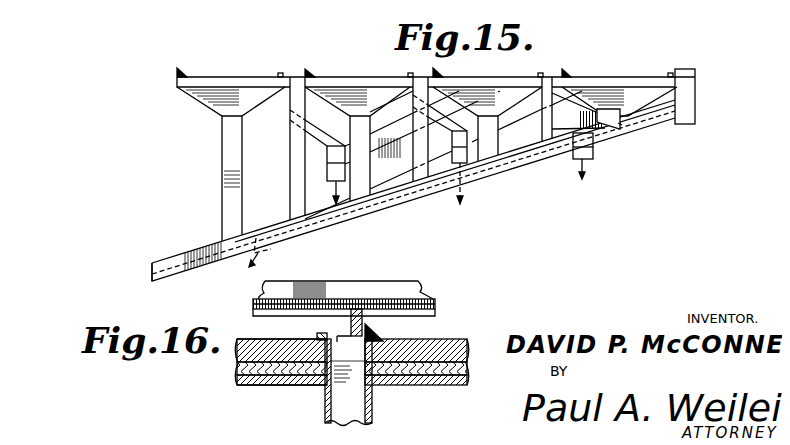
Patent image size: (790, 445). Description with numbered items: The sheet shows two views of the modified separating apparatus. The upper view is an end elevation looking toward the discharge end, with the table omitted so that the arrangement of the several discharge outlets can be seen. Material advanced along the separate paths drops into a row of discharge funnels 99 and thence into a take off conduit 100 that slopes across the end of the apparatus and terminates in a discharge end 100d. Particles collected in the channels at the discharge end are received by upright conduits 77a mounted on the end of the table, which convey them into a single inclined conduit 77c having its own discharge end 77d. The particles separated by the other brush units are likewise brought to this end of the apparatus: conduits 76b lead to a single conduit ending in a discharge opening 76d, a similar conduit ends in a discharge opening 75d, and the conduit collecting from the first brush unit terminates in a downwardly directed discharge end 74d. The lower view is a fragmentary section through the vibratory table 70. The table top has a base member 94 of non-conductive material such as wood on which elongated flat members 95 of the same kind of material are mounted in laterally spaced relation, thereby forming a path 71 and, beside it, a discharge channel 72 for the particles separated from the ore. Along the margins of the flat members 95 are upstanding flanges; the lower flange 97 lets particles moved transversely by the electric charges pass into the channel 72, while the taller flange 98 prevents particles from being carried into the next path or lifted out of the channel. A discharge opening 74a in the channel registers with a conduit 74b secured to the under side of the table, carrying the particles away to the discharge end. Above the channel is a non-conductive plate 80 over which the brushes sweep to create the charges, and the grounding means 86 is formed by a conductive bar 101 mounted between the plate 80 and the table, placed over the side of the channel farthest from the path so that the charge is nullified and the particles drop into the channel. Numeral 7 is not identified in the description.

In FIG. 15, the discharge funnel 99 is at (231, 85).
In FIG. 15, the upright conduit 77a is at (292, 82).
In FIG. 15, the conduit 76b is at (325, 144).
In FIG. 15, the discharge opening 76d is at (333, 186).
In FIG. 15, the inclined conduit 77c is at (323, 208).
In FIG. 15, the discharge end 77d is at (266, 247).
In FIG. 15, the take off conduit 100 is at (197, 252).
In FIG. 15, the discharge end 100d is at (151, 268).
In FIG. 15, the discharge opening 75d is at (465, 130).
In FIG. 15, the discharge end 74d is at (595, 160).
In FIG. 15, the guide 7 is at (622, 124).
In FIG. 16, the bar 101 is at (349, 308).
In FIG. 16, the grounding means 86 is at (365, 297).
In FIG. 16, the non-conductive plate 80 is at (415, 293).
In FIG. 16, the path 71 is at (245, 332).
In FIG. 16, the discharge channel 72 is at (335, 335).
In FIG. 16, the flange 98 is at (380, 333).
In FIG. 16, the flat member 95 is at (242, 359).
In FIG. 16, the vibratory table 70 is at (230, 370).
In FIG. 16, the base member 94 is at (255, 384).
In FIG. 16, the flange 97 is at (298, 373).
In FIG. 16, the conduit 74b is at (324, 413).
In FIG. 16, the discharge opening 74a is at (348, 377).